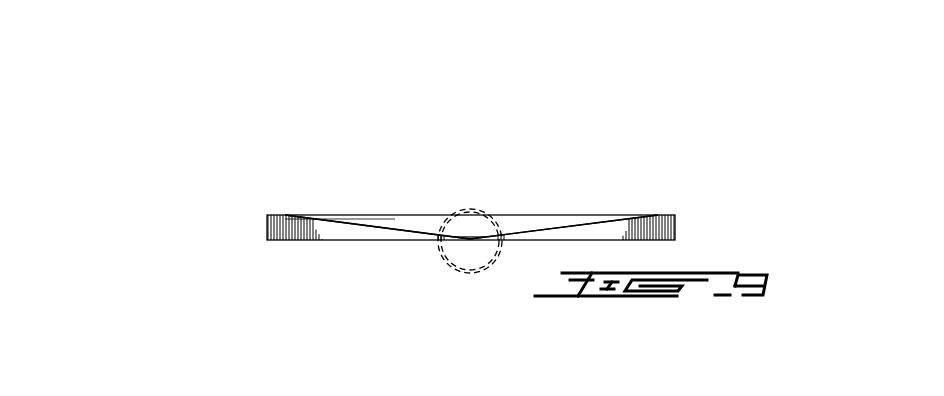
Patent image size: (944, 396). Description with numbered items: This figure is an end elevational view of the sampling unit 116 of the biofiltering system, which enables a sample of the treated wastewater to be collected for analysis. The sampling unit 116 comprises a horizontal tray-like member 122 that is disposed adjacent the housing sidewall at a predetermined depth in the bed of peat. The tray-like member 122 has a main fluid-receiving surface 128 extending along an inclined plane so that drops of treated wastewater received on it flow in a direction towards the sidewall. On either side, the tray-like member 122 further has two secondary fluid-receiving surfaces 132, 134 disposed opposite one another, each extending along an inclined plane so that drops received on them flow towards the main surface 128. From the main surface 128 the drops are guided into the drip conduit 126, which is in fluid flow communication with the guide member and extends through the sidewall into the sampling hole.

The sampling unit 116 is at (690, 202).
The tray-like member 122 is at (283, 230).
The drip conduit 126 is at (452, 273).
The main fluid-receiving surface 128 is at (472, 223).
The secondary fluid-receiving surface 132 is at (368, 222).
The secondary fluid-receiving surface 134 is at (588, 222).